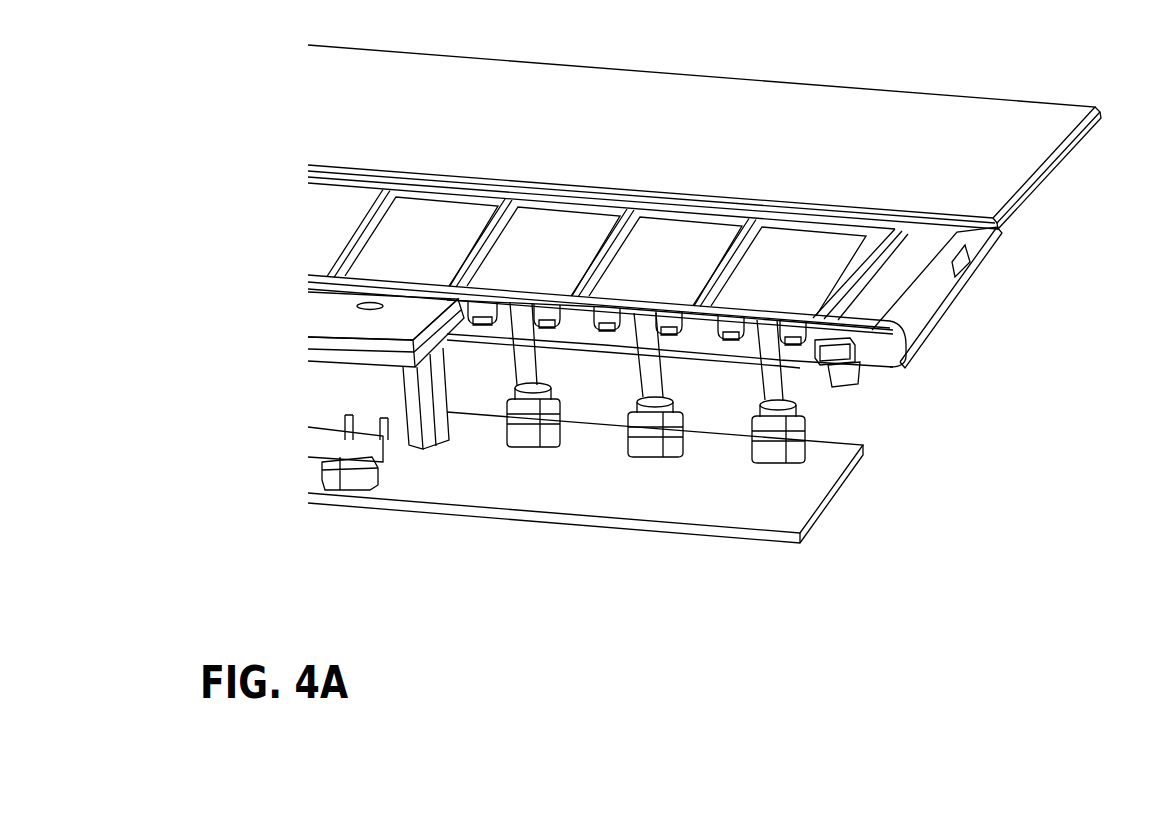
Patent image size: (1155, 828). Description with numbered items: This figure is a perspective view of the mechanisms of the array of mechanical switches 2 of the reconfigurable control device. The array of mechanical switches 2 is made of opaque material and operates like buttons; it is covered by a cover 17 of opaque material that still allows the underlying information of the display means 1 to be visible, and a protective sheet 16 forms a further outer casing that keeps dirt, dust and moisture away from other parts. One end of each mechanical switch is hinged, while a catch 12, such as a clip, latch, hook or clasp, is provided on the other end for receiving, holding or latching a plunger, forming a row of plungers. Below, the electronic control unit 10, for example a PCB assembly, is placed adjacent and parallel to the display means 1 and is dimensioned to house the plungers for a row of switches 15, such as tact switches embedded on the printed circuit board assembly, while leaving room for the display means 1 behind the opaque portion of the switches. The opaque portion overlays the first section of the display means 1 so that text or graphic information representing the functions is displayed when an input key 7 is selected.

The display means 1 is at (975, 278).
The array of mechanical switches 2 is at (856, 296).
The input key 7 is at (350, 320).
The electronic control unit 10 is at (578, 490).
The catch 12 is at (812, 337).
The switches 15 is at (793, 440).
The protective sheet 16 is at (887, 121).
The cover 17 is at (325, 222).